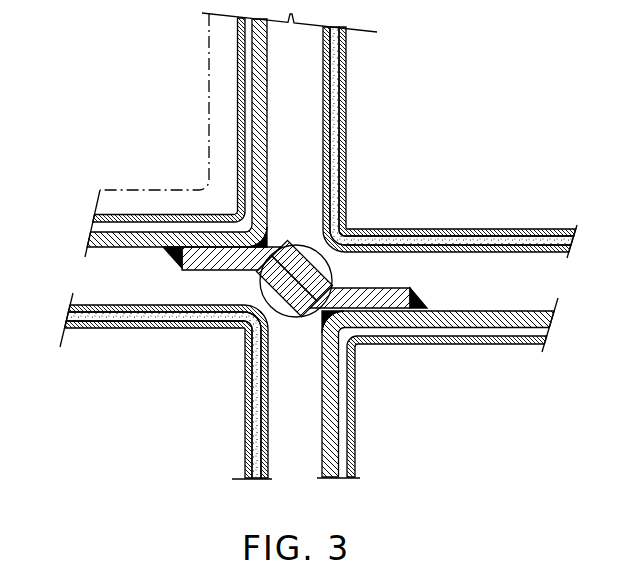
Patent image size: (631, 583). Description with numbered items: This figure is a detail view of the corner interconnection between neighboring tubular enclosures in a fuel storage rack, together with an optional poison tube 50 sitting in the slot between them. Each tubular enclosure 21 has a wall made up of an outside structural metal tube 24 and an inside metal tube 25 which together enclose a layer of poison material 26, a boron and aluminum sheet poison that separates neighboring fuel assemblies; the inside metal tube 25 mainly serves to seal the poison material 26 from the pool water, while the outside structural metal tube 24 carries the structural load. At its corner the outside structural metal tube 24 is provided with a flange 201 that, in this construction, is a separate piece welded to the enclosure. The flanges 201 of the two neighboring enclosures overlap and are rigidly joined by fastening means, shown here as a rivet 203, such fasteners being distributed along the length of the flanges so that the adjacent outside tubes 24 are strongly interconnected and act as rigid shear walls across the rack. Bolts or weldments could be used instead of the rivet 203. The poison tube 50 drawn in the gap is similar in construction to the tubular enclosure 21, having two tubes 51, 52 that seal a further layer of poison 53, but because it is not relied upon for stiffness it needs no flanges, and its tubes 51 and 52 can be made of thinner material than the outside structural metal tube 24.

The tubular enclosure 21 is at (427, 404).
The outside structural metal tube 24 is at (425, 411).
The inside metal tube 25 is at (353, 432).
The poison material 26 is at (338, 395).
The poison tube 50 is at (141, 373).
The tube 51 is at (107, 304).
The tube 52 is at (83, 326).
The poison 53 is at (68, 313).
The flange 201 is at (237, 270).
The rivet 203 is at (326, 260).